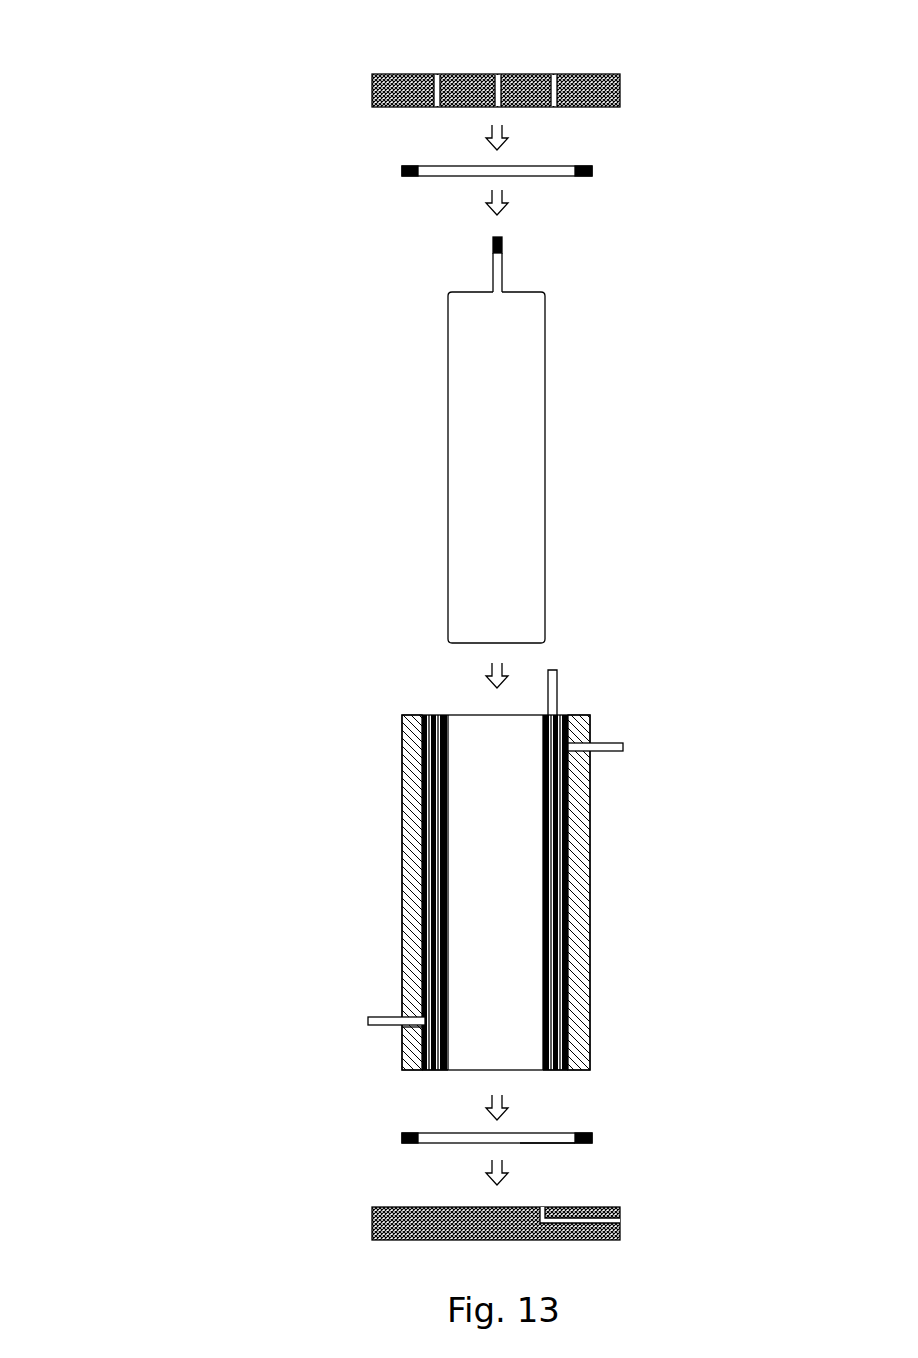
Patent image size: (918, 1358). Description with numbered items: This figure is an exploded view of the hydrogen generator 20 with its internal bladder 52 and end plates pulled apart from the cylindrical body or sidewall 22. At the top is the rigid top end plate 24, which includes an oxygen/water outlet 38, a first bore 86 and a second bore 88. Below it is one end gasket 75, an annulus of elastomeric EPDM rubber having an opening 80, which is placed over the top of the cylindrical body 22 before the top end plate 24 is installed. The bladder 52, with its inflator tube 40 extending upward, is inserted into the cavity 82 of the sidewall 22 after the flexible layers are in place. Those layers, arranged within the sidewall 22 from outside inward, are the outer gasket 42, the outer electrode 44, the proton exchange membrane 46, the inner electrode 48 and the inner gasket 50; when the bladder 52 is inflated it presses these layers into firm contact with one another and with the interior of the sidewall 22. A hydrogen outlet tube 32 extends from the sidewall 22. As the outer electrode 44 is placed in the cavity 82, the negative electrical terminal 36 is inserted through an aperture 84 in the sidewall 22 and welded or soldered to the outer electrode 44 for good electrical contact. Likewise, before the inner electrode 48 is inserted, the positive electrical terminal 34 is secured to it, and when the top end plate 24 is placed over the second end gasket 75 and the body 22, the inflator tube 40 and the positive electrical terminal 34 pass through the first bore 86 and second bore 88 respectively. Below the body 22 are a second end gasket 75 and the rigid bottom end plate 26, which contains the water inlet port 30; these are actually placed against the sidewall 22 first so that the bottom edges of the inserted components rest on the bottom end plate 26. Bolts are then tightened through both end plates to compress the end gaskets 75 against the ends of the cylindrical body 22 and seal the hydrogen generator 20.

The hydrogen generator 20 is at (172, 530).
The top end plate 24 is at (620, 88).
The oxygen/water outlet 38 is at (436, 74).
The first bore 86 is at (497, 74).
The second bore 88 is at (553, 74).
The end gasket 75 is at (592, 171).
The inflator tube 40 is at (502, 265).
The bladder 52 is at (545, 465).
The positive electrical terminal 34 is at (557, 692).
The hydrogen outlet tube 32 is at (610, 752).
The cylindrical body or sidewall 22 is at (400, 866).
The outer gasket 42 is at (422, 715).
The inner gasket 50 is at (443, 715).
The proton exchange membrane 46 is at (560, 1015).
The cavity 82 is at (511, 903).
The negative electrical terminal 36 is at (378, 1015).
The aperture 84 is at (400, 1028).
The outer electrode 44 is at (425, 1072).
The inner electrode 48 is at (553, 1072).
The opening 80 is at (548, 1143).
The bottom end plate 26 is at (372, 1219).
The water inlet port 30 is at (620, 1222).